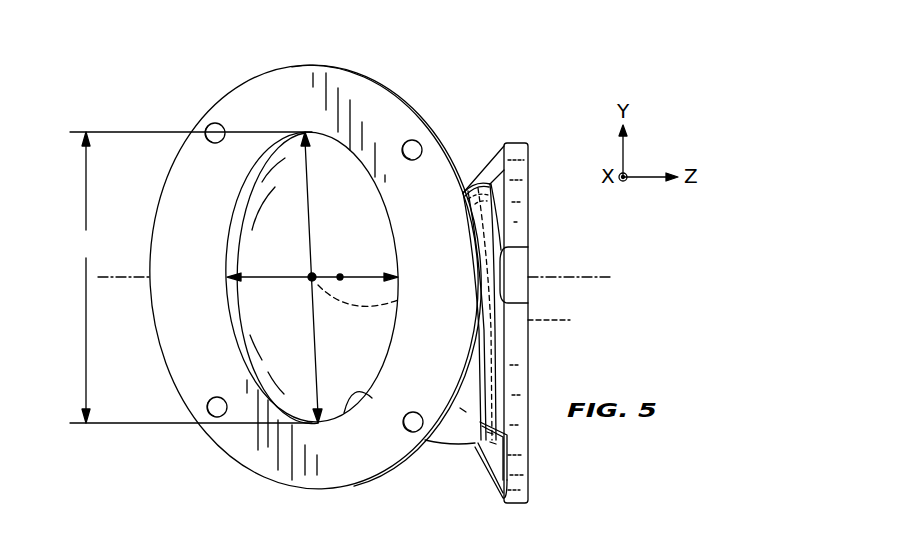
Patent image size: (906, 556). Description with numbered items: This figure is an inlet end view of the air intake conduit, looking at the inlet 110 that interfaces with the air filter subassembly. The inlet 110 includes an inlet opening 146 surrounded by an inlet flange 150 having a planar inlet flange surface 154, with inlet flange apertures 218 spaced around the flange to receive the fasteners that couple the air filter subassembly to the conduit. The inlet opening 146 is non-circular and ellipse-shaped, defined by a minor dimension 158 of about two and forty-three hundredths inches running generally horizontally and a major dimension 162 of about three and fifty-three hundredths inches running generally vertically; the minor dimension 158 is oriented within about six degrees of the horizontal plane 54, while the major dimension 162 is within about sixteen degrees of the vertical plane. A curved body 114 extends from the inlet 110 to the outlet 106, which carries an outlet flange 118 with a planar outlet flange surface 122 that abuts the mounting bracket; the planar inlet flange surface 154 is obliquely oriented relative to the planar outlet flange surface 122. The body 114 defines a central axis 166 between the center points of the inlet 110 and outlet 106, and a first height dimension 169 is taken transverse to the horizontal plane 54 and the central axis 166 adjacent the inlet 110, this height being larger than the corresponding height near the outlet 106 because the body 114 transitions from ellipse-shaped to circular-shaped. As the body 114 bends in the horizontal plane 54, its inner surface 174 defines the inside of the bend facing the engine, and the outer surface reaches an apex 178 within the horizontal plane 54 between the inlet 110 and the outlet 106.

The horizontal plane 54 is at (573, 277).
The outlet 106 is at (340, 283).
The inlet 110 is at (281, 283).
The body 114 is at (463, 190).
The outlet flange 118 is at (549, 302).
The planar outlet flange surface 122 is at (530, 205).
The inlet opening 146 is at (343, 405).
The inlet flange 150 is at (355, 72).
The planar inlet flange surface 154 is at (183, 222).
The minor dimension 158 is at (265, 290).
The major dimension 162 is at (310, 184).
The central axis 166 is at (547, 323).
The first height dimension 169 is at (191, 277).
The inner surface 174 is at (458, 421).
The apex 178 is at (340, 277).
The inlet flange apertures 218 is at (218, 122).